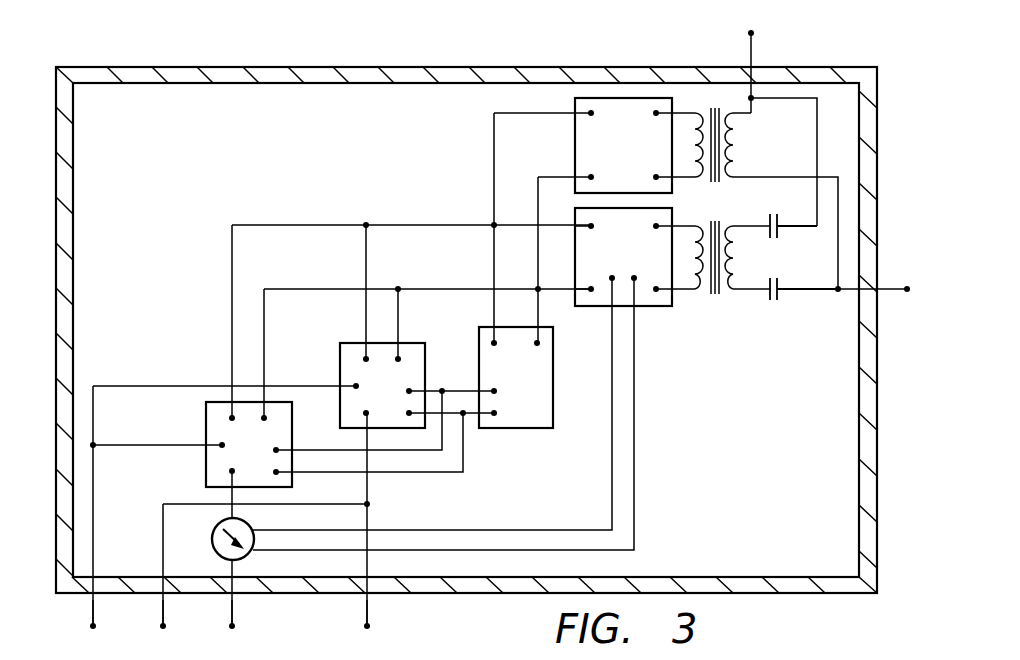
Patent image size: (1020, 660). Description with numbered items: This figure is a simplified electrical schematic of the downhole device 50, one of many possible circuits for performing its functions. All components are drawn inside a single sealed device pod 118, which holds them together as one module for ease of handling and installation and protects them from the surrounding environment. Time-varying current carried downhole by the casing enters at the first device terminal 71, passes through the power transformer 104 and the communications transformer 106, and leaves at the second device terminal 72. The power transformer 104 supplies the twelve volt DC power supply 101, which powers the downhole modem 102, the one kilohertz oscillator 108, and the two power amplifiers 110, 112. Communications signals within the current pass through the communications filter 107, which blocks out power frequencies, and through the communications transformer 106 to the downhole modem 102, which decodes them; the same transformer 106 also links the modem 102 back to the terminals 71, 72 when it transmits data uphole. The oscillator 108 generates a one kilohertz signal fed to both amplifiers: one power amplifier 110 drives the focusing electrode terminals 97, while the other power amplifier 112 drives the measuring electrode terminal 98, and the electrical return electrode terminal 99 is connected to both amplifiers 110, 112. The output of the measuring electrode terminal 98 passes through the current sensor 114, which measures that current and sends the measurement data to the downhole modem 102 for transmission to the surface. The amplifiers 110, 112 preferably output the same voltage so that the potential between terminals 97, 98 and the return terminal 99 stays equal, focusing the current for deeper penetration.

The downhole device 50 is at (302, 60).
The device pod 118 is at (132, 71).
The first device terminal 71 is at (752, 50).
The second device terminal 72 is at (893, 286).
The DC power supply 101 is at (575, 154).
The downhole modem 102 is at (656, 308).
The power transformer 104 is at (735, 155).
The communications transformer 106 is at (715, 295).
The communications filter 107 is at (778, 300).
The 1 kHz oscillator 108 is at (517, 430).
The power amplifier 110 is at (340, 362).
The power amplifier 112 is at (206, 465).
The current sensor 114 is at (212, 539).
The focusing electrode terminals 97 is at (163, 613).
The measuring electrode terminal 98 is at (232, 613).
The electrical return electrode terminal 99 is at (93, 613).